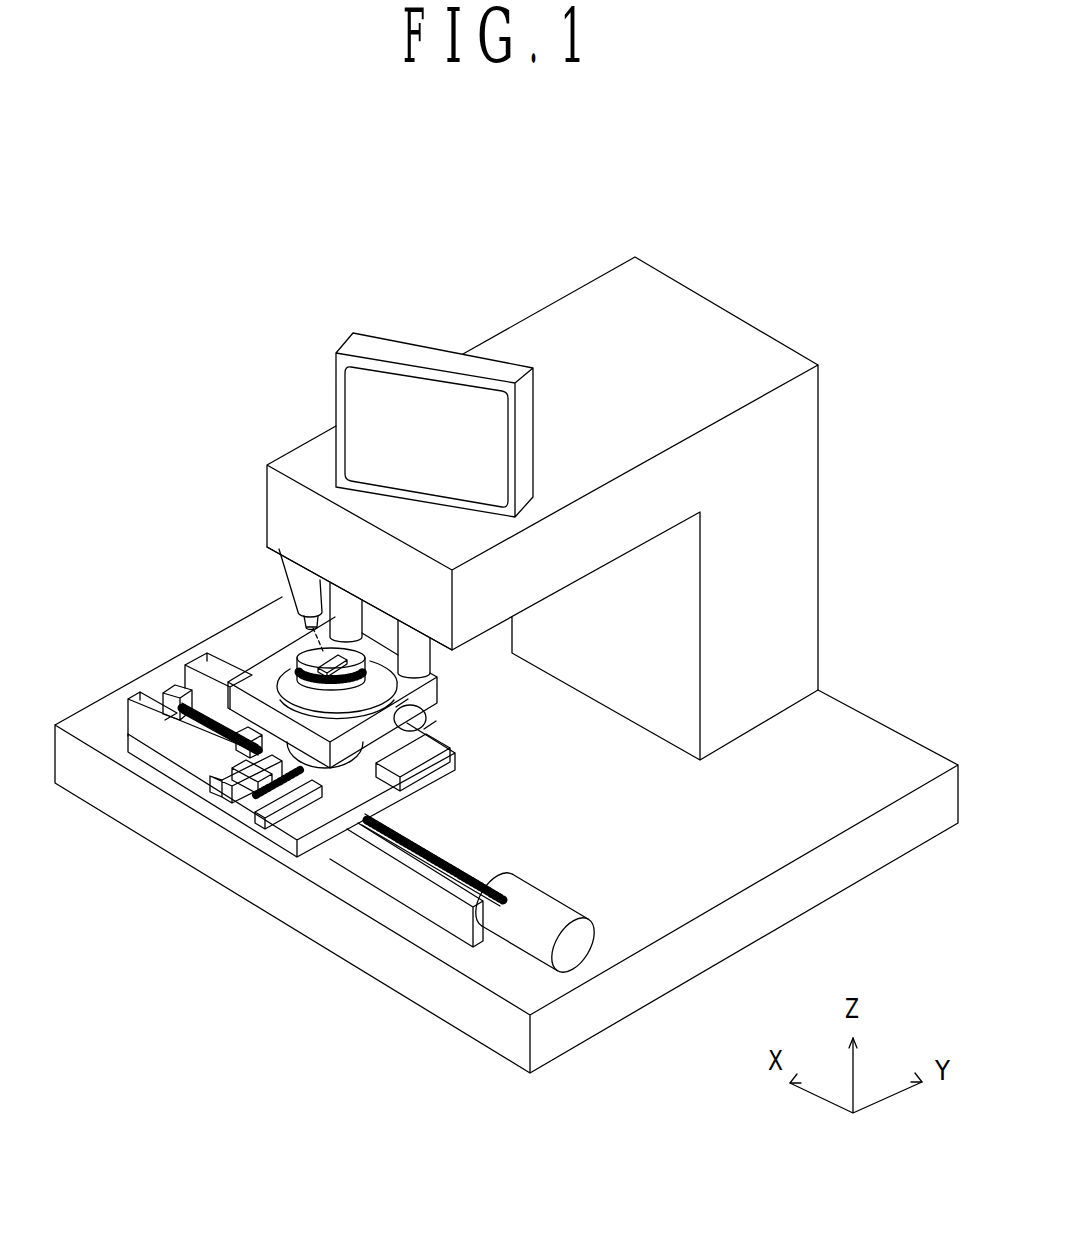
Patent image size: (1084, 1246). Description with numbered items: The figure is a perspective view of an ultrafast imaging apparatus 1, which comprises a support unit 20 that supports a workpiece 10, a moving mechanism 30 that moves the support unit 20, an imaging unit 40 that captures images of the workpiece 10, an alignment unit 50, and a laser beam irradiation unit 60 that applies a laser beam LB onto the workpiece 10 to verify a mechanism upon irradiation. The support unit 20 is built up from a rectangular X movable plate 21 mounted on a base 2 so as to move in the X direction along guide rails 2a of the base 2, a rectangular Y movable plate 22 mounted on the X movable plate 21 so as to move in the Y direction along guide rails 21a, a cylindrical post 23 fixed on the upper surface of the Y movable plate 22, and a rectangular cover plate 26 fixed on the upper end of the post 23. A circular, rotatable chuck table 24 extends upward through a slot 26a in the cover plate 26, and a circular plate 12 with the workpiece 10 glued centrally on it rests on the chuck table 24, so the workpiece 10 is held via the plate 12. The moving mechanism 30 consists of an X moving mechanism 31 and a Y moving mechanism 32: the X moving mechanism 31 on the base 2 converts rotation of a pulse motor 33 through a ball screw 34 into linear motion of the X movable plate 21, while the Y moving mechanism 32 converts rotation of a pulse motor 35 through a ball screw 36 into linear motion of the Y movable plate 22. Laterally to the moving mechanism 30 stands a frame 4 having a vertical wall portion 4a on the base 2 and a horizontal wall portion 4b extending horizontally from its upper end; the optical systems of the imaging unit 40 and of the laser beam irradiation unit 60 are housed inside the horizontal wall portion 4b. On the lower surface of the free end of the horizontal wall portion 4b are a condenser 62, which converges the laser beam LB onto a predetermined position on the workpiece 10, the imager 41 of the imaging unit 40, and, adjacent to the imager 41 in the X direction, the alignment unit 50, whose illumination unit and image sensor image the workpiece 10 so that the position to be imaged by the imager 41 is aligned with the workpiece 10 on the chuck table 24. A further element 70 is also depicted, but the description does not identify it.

The ultrafast imaging apparatus 1 is at (127, 562).
The base 2 is at (832, 817).
The guide rails 2a is at (193, 657).
The frame 4 is at (614, 508).
The vertical wall portion 4a is at (800, 480).
The horizontal wall portion 4b is at (560, 558).
The workpiece 10 is at (352, 598).
The circular plate 12 is at (300, 658).
The support unit 20 is at (254, 829).
The X movable plate 21 is at (279, 892).
The guide rails 21a is at (232, 785).
The Y movable plate 22 is at (372, 820).
The post 23 is at (286, 873).
The chuck table 24 is at (274, 735).
The cover plate 26 is at (187, 718).
The slot 26a is at (212, 740).
The moving mechanism 30 is at (500, 839).
The X moving mechanism 31 is at (493, 896).
The Y moving mechanism 32 is at (470, 745).
The pulse motor 33 is at (542, 908).
The ball screw 34 is at (530, 853).
The pulse motor 35 is at (420, 717).
The ball screw 36 is at (444, 762).
The imaging unit 40 is at (386, 601).
The imager 41 is at (350, 620).
The alignment unit 50 is at (413, 653).
The laser beam irradiation unit 60 is at (275, 558).
The condenser 62 is at (297, 580).
The display unit 70 is at (367, 352).
The laser beam LB is at (297, 635).